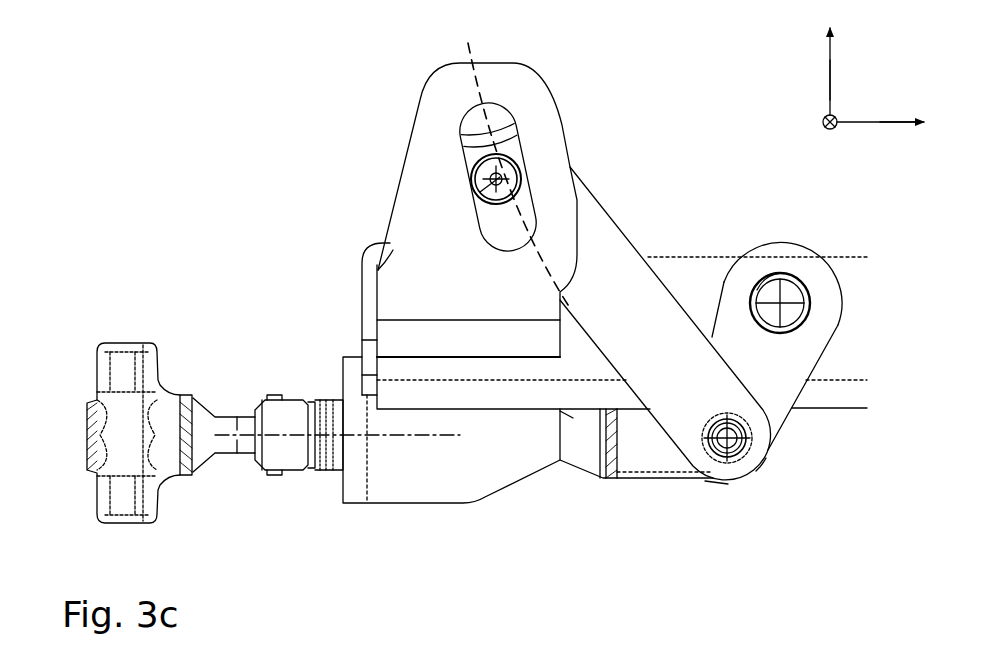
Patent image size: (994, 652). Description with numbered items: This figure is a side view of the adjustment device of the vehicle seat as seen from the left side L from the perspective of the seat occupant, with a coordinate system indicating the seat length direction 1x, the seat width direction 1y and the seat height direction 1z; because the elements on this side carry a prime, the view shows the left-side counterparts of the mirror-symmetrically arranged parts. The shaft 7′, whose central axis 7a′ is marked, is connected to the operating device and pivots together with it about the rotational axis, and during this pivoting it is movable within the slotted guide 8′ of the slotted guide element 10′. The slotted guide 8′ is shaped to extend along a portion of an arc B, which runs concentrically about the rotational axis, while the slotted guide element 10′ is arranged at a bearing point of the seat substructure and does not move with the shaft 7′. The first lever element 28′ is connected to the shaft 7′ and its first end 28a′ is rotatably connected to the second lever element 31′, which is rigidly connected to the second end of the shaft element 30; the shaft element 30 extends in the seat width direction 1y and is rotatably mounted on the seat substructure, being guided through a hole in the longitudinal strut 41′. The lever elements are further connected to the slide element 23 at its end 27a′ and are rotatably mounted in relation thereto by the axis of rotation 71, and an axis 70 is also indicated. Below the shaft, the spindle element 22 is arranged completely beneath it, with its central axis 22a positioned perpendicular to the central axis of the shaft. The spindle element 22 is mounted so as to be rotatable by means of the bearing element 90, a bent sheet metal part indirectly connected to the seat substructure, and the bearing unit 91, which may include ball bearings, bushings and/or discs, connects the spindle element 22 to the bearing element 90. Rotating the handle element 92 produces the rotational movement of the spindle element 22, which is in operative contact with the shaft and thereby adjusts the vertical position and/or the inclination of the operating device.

The slotted guide element 10′ is at (418, 183).
The slotted guide 8′ is at (500, 103).
The arc B is at (468, 54).
The shaft 7′ is at (506, 171).
The central axis of the shaft 7a′ is at (484, 189).
The first lever element 28′ is at (623, 250).
The first end of the first lever element 28a′ is at (714, 487).
The end of the slide element 27a′ is at (765, 470).
The axis of rotation 71 is at (733, 445).
The second lever element 31′ is at (817, 337).
The longitudinal strut 41′ is at (838, 368).
The axis 70 is at (795, 291).
The shaft element 30 is at (767, 293).
The bearing element 90 is at (441, 482).
The slide element 23 is at (636, 463).
The central axis of the spindle element 22a is at (383, 438).
The spindle element 22 is at (284, 462).
The bearing unit 91 is at (318, 377).
The handle element 92 is at (128, 437).
The left side L is at (845, 106).
The seat length direction 1x is at (905, 125).
The seat width direction 1y is at (833, 130).
The seat height direction 1z is at (830, 80).